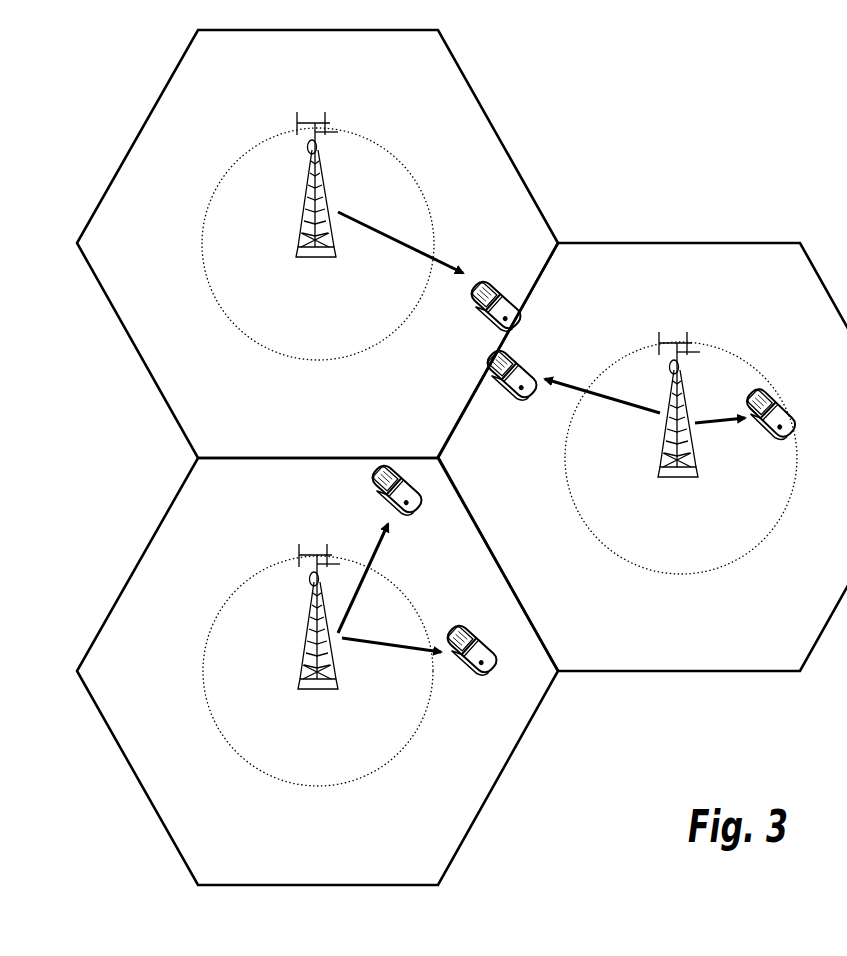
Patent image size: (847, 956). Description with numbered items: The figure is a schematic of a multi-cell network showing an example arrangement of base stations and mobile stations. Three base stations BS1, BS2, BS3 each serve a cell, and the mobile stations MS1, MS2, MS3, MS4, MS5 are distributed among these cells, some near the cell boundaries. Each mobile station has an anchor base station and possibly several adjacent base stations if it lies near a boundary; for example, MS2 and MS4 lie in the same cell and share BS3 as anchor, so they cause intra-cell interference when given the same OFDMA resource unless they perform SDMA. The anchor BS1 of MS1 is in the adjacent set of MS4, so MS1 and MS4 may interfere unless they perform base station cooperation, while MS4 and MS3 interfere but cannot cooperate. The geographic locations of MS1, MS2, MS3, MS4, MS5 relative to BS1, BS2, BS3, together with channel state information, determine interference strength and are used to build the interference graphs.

The base station BS1 is at (318, 236).
The base station BS2 is at (318, 665).
The base station BS3 is at (681, 453).
The mobile station MS1 is at (495, 277).
The mobile station MS2 is at (783, 441).
The mobile station MS3 is at (487, 677).
The mobile station MS4 is at (514, 404).
The mobile station MS5 is at (396, 468).